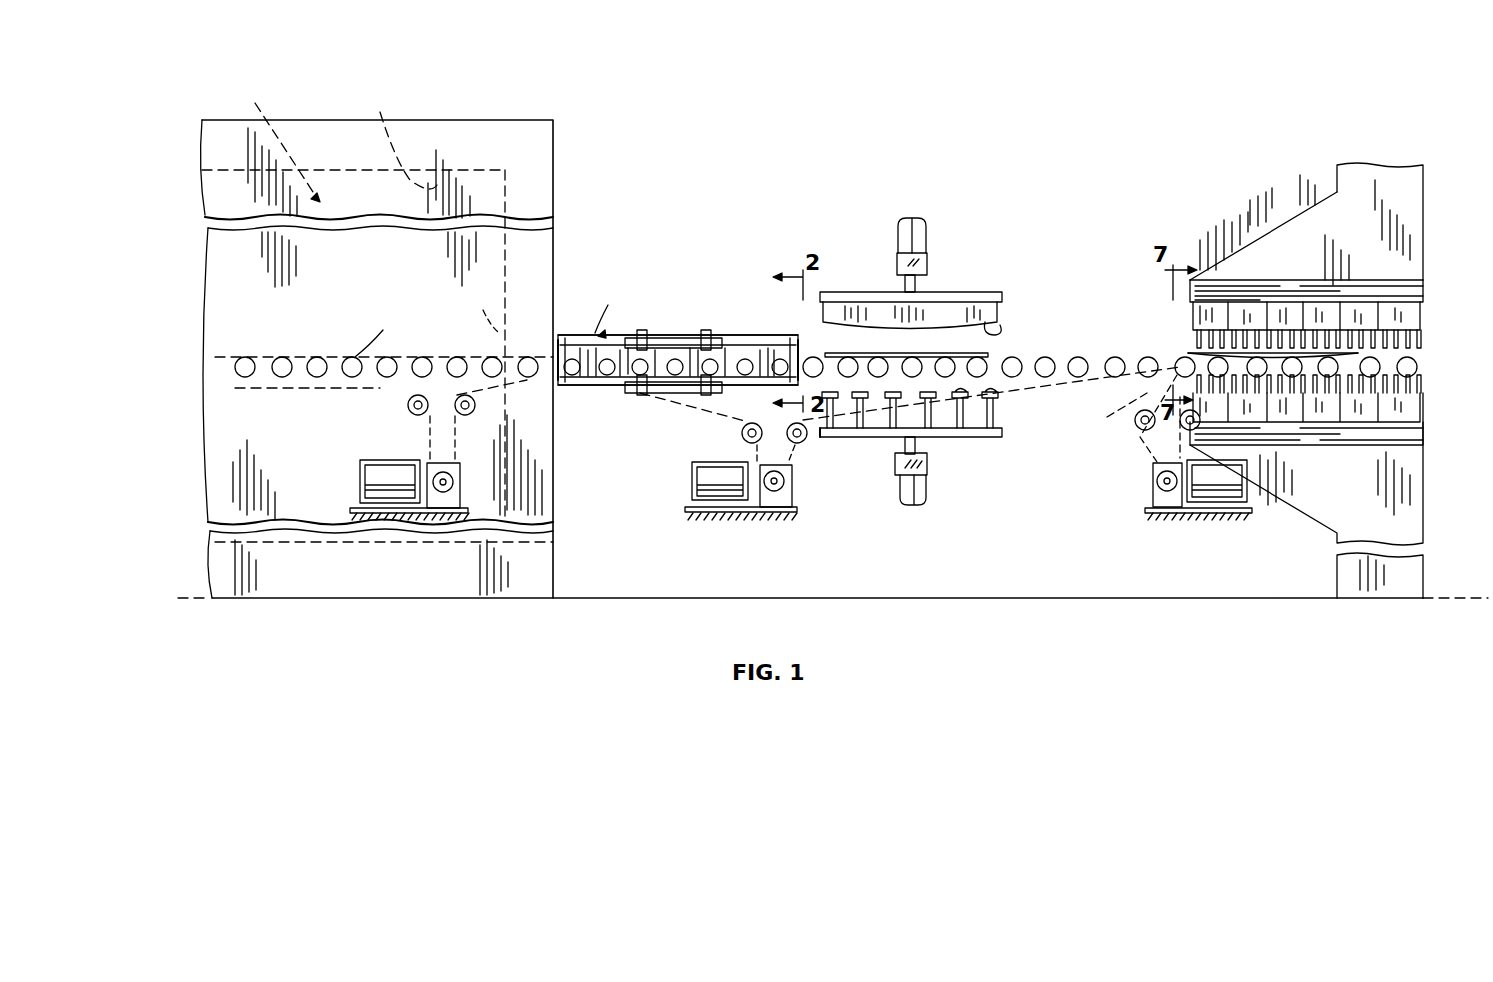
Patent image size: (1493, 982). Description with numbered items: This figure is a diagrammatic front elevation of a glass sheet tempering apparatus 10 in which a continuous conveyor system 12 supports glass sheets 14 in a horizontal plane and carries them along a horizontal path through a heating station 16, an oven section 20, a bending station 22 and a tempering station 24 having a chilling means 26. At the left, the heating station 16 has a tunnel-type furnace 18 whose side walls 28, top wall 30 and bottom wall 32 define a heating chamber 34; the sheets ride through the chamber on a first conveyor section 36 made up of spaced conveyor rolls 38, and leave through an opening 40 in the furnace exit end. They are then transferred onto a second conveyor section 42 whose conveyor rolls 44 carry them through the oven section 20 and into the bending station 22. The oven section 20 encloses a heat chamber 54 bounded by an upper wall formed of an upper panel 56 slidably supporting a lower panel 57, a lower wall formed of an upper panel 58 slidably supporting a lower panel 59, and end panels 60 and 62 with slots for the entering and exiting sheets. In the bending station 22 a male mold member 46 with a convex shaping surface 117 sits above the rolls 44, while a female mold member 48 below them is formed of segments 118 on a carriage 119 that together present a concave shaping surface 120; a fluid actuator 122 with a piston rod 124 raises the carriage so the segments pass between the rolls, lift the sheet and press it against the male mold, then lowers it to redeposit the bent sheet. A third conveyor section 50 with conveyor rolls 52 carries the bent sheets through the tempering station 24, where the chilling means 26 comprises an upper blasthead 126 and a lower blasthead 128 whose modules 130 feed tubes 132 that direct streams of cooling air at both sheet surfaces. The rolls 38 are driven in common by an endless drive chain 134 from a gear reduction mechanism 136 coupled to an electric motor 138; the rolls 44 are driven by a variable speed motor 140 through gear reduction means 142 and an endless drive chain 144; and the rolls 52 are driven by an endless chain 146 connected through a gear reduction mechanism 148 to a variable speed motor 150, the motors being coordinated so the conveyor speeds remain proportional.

The glass sheet tempering apparatus 10 is at (845, 125).
The conveyor system 12 is at (305, 403).
The glass sheets 14 is at (900, 353).
The heating station 16 is at (490, 106).
The furnace 18 is at (204, 207).
The oven section 20 is at (673, 331).
The bending station 22 is at (947, 250).
The tempering station 24 is at (1292, 196).
The chilling means 26 is at (1241, 256).
The side walls 28 is at (365, 302).
The top wall 30 is at (396, 136).
The bottom wall 32 is at (220, 546).
The heating chamber 34 is at (275, 139).
The first conveyor section 36 is at (352, 378).
The conveyor rolls 38 is at (377, 332).
The opening 40 is at (492, 340).
The second conveyor section 42 is at (678, 416).
The conveyor rolls 44 is at (638, 380).
The male mold member 46 is at (947, 292).
The female mold member 48 is at (958, 441).
The third conveyor section 50 is at (1176, 357).
The conveyor rolls 52 is at (1280, 380).
The heat chamber 54 is at (658, 310).
The upper panel 56 is at (630, 338).
The lower panel 57 is at (738, 334).
The upper panel 58 is at (586, 388).
The lower panel 59 is at (720, 394).
The end panel 60 is at (559, 334).
The end panel 62 is at (798, 350).
The shaping surface 117 is at (1004, 330).
The segments 118 is at (893, 400).
The carriage 119 is at (838, 438).
The shaping surface 120 is at (980, 402).
The fluid actuator 122 is at (905, 490).
The piston rod 124 is at (916, 446).
The upper blasthead 126 is at (1412, 190).
The lower blasthead 128 is at (1418, 503).
The modules 130 is at (1405, 315).
The tubes 132 is at (1423, 348).
The endless drive chain 134 is at (390, 395).
The gear reduction mechanism 136 is at (455, 481).
The electric motor 138 is at (362, 483).
The variable speed motor 140 is at (692, 496).
The gear reduction means 142 is at (778, 502).
The endless drive chain 144 is at (704, 410).
The endless chain 146 is at (1136, 418).
The gear reduction mechanism 148 is at (1152, 492).
The variable speed motor 150 is at (1205, 492).